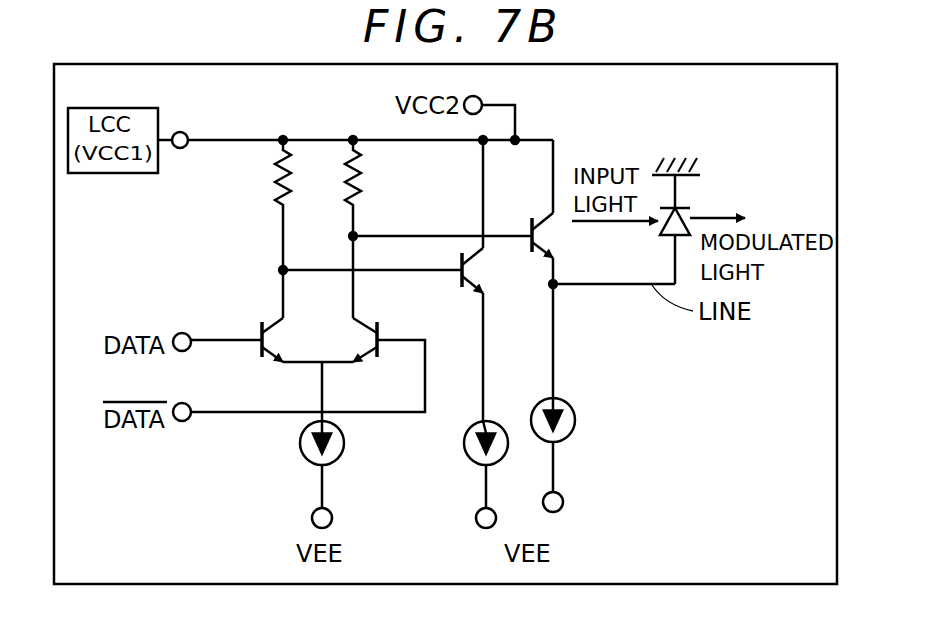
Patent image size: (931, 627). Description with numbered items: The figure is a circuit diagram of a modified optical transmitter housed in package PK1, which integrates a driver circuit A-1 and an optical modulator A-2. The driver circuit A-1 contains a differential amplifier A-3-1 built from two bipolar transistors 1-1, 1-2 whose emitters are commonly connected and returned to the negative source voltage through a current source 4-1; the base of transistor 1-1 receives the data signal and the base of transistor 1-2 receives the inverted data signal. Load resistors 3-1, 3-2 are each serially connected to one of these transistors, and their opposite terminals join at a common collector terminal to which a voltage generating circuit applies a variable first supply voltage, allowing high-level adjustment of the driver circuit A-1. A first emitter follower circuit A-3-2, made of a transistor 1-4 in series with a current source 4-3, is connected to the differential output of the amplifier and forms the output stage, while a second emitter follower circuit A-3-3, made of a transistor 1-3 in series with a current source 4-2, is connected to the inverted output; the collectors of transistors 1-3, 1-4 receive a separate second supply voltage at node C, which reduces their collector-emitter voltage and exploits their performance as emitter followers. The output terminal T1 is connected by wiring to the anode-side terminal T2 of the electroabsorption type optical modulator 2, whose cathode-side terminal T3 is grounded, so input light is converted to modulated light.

The package PK1 is at (205, 63).
The driver circuit A-1 is at (318, 128).
The connection node C is at (537, 115).
The optical modulator A-2 is at (681, 115).
The load resistor 3-1 is at (276, 174).
The load resistor 3-2 is at (362, 178).
The bipolar transistor 1-1 is at (262, 331).
The bipolar transistor 1-2 is at (378, 328).
The transistor 1-3 is at (458, 260).
The transistor 1-4 is at (530, 224).
The differential amplifier A-3-1 is at (270, 290).
The first emitter follower circuit A-3-2 is at (562, 290).
The second emitter follower circuit A-3-3 is at (497, 293).
The output terminal T1 is at (557, 282).
The terminal T2 is at (673, 240).
The terminal T3 is at (684, 204).
The EA type optical modulator 2 is at (690, 213).
The current source 4-1 is at (299, 444).
The current source 4-2 is at (464, 444).
The current source 4-3 is at (576, 420).